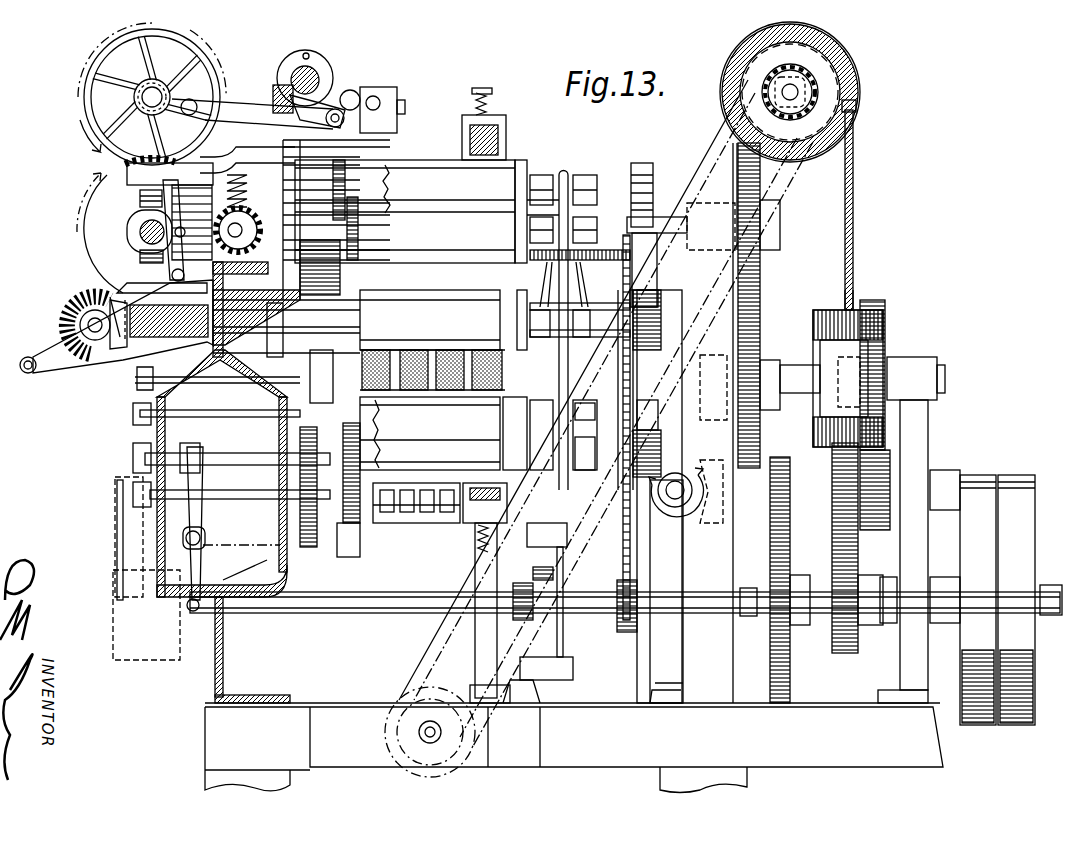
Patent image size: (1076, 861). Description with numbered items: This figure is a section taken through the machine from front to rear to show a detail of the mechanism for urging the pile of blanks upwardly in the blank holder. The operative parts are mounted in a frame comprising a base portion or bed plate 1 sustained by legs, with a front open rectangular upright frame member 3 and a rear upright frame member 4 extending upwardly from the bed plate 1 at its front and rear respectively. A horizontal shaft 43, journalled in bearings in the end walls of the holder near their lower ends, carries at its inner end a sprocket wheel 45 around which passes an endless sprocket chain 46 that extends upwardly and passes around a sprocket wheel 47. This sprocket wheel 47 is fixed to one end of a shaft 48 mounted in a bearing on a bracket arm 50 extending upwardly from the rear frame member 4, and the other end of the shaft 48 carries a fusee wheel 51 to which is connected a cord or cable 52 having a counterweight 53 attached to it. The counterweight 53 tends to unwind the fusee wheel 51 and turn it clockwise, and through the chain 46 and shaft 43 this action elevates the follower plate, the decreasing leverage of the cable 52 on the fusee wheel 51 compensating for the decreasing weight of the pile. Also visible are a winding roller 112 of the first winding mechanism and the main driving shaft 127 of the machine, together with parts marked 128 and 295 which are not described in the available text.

The base portion or bed plate 1 is at (574, 748).
The front upright frame member 3 is at (223, 526).
The rear upright frame member 4 is at (690, 260).
The horizontal shaft 43 is at (437, 733).
The sprocket wheel 45 is at (442, 688).
The endless sprocket chain 46 is at (786, 186).
The sprocket wheel 47 is at (793, 88).
The shaft 48 is at (806, 93).
The bracket arm 50 is at (728, 124).
The fusee wheel 51 is at (860, 86).
The cord or cable 52 is at (852, 162).
The counterweight 53 is at (830, 312).
The winding roller 112 is at (405, 356).
The main driving shaft 127 is at (190, 616).
The pulley 128 is at (997, 600).
The ratchet wheel 295 is at (680, 485).